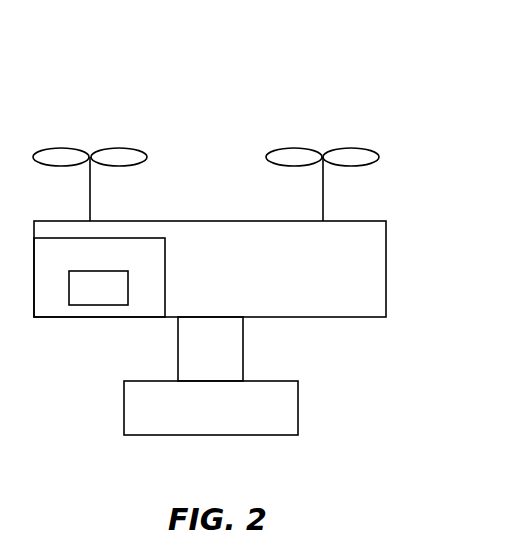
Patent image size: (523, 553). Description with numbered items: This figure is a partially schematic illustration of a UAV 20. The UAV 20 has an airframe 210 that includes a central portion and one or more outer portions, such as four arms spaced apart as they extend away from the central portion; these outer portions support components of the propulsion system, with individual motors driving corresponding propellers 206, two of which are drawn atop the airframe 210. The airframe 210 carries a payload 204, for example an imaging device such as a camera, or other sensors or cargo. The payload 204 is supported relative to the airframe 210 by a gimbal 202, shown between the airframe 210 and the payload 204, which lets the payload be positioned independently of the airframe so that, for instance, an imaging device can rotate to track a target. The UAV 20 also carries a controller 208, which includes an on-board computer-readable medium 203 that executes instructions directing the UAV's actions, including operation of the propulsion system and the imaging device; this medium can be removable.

The UAV 20 is at (426, 66).
The gimbal 202 is at (210, 349).
The on-board computer-readable medium 203 is at (98, 288).
The payload 204 is at (211, 408).
The propellers 206 is at (121, 132).
The controller 208 is at (99, 277).
The airframe 210 is at (385, 220).